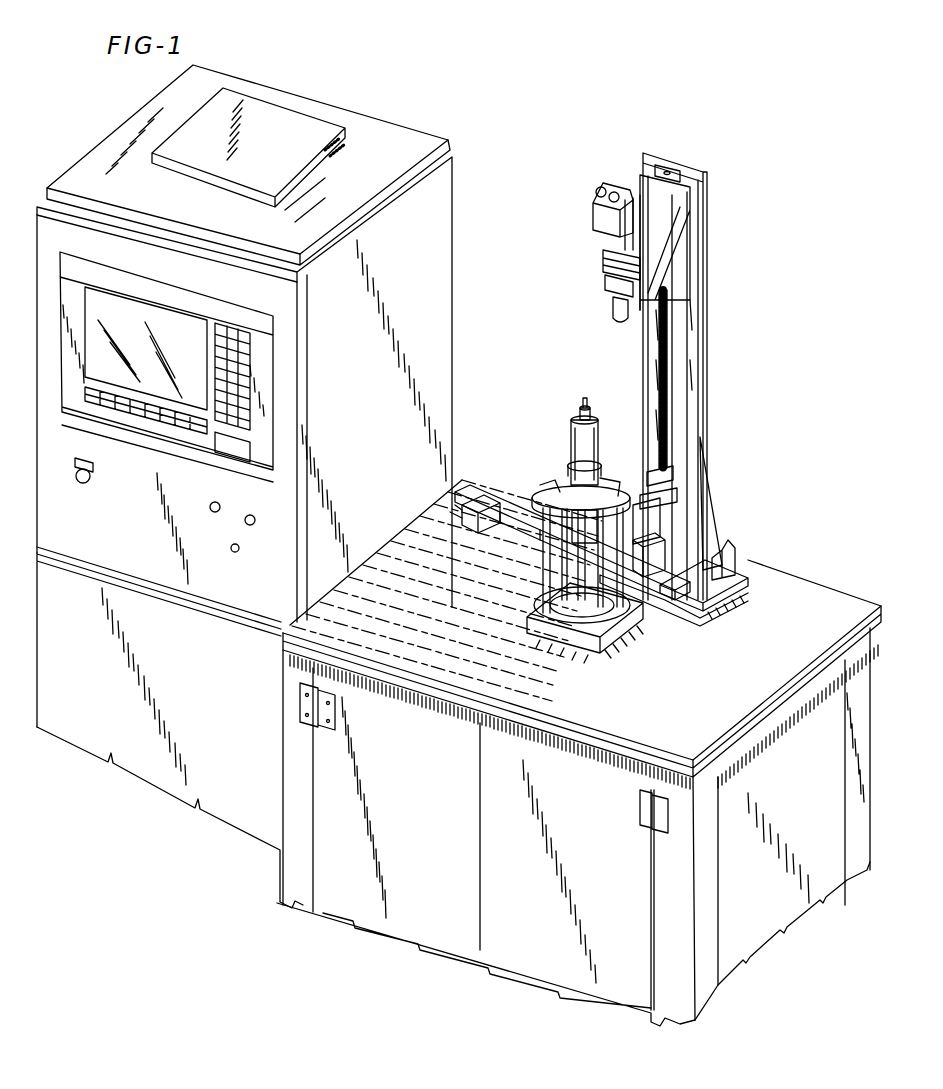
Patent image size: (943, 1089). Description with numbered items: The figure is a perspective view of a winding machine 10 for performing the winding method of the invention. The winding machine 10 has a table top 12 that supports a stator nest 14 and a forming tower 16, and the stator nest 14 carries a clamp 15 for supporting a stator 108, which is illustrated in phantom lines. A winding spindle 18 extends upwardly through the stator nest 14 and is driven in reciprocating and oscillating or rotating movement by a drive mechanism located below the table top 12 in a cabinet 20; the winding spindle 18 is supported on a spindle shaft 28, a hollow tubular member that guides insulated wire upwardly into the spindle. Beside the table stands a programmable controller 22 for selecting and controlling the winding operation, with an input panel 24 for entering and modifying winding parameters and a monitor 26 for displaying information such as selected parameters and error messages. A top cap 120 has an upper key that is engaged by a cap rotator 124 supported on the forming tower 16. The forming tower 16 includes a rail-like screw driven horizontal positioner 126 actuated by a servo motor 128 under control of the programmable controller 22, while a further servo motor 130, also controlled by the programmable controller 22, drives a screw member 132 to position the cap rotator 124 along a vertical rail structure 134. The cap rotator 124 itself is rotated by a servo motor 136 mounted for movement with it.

The winding machine 10 is at (800, 522).
The table top 12 is at (818, 586).
The stator nest 14 is at (598, 652).
The clamp 15 is at (540, 512).
The forming tower 16 is at (712, 166).
The winding spindle 18 is at (574, 450).
The cabinet 20 is at (852, 690).
The programmable controller 22 is at (453, 150).
The input panel 24 is at (200, 450).
The monitor 26 is at (135, 322).
The spindle shaft 28 is at (545, 603).
The stator 108 is at (566, 464).
The top cap 120 is at (580, 404).
The cap rotator 124 is at (608, 314).
The horizontal positioner 126 is at (640, 580).
The servo motor 128 is at (448, 498).
The servo motor 130 is at (706, 614).
The screw member 132 is at (668, 442).
The vertical rail structure 134 is at (644, 378).
The servo motor 136 is at (600, 192).